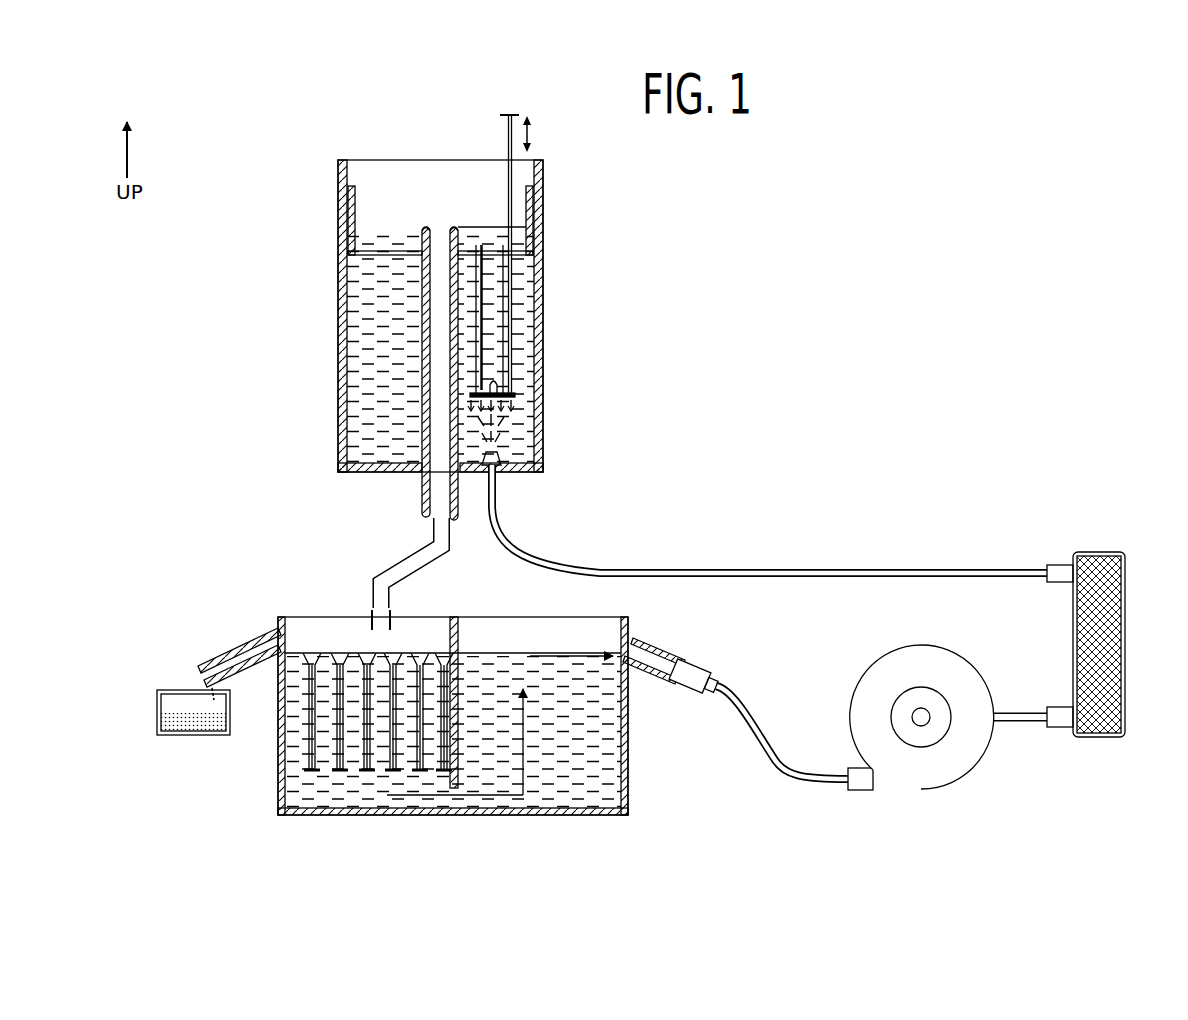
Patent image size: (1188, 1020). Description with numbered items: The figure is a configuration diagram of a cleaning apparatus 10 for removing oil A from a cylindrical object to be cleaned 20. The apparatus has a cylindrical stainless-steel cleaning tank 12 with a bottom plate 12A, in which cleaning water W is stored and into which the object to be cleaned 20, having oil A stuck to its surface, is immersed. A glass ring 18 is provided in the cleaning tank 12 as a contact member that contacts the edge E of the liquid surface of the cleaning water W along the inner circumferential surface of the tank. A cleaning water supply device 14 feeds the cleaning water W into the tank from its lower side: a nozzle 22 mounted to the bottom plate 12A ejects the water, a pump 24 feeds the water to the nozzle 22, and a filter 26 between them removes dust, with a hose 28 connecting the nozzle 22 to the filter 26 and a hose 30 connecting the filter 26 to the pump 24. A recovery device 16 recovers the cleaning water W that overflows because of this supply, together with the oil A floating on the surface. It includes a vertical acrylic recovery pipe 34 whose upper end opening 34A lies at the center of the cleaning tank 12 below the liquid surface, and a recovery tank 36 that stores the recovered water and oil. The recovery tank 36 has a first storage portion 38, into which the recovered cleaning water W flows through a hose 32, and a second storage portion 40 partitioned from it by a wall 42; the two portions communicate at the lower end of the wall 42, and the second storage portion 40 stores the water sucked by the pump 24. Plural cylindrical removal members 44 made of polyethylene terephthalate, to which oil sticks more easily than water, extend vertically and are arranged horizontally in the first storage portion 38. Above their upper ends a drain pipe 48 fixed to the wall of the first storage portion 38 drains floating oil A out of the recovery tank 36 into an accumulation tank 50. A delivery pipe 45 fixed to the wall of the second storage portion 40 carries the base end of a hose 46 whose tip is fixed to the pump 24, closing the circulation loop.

The cleaning apparatus 10 is at (1048, 186).
The cleaning tank 12 is at (465, 339).
The bottom plate 12A is at (360, 473).
The cleaning water supply device 14 is at (968, 441).
The recovery device 16 is at (237, 566).
The glass ring 18 is at (352, 212).
The object to be cleaned 20 is at (507, 345).
The nozzle 22 is at (502, 455).
The pump 24 is at (922, 645).
The filter 26 is at (1125, 608).
The hose 28 is at (824, 570).
The hose 30 is at (1015, 722).
The hose 32 is at (412, 549).
The recovery pipe 34 is at (373, 317).
The upper end opening 34A is at (428, 226).
The recovery tank 36 is at (628, 737).
The first storage portion 38 is at (384, 796).
The second storage portion 40 is at (548, 790).
The wall 42 is at (456, 640).
The removal members 44 is at (367, 773).
The delivery pipe 45 is at (690, 662).
The hose 46 is at (768, 706).
The drain pipe 48 is at (243, 647).
The accumulation tank 50 is at (160, 733).
The cleaning water W is at (360, 359).
The edge of the liquid surface E is at (355, 218).
The oil A is at (189, 704).